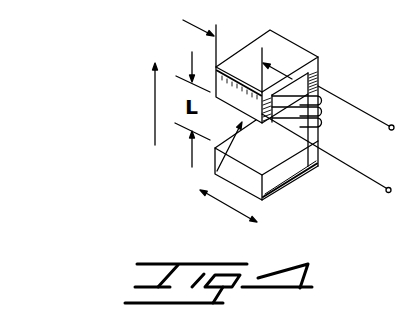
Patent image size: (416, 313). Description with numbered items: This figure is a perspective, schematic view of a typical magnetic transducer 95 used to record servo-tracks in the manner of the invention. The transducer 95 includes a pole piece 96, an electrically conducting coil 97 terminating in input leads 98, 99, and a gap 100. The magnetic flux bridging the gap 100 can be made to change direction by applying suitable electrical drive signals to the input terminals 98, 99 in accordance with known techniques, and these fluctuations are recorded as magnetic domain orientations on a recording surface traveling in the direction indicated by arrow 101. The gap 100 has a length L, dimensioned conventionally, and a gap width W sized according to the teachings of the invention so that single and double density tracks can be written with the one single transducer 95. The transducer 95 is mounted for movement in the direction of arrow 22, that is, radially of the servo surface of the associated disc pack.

The transducer 95 is at (186, 37).
The pole piece 96 is at (288, 51).
The electrically conducting coil 97 is at (323, 121).
The input lead 98 is at (347, 98).
The input lead 99 is at (365, 176).
The gap 100 is at (215, 173).
The arrow 101 is at (155, 97).
The arrow 22 is at (227, 206).